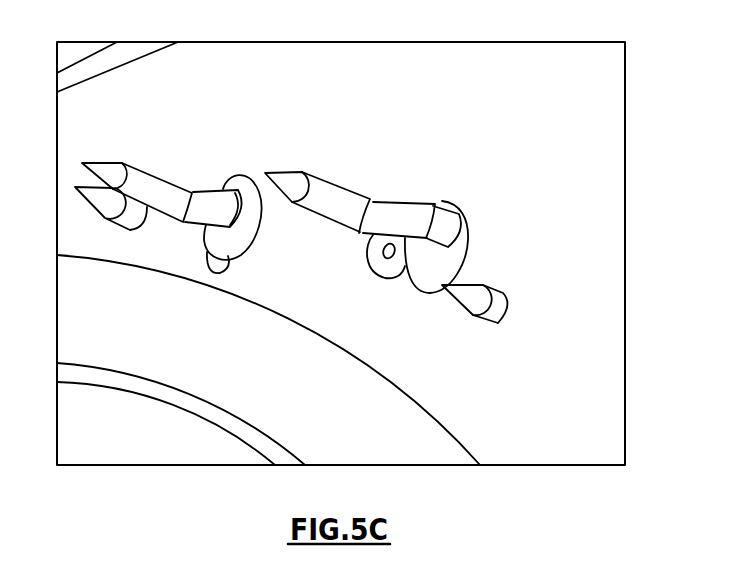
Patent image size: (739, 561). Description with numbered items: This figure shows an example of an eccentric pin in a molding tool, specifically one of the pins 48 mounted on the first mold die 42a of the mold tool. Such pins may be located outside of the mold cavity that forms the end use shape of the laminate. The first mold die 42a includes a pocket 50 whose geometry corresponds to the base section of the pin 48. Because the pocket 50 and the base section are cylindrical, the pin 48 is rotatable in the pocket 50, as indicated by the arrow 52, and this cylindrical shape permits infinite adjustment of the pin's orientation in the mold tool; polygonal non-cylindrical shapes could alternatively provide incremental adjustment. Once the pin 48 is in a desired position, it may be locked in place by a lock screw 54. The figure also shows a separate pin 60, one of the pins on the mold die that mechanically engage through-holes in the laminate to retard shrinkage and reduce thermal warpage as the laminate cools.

The first mold die 42a is at (591, 176).
The pin 48 is at (457, 188).
The pocket 50 is at (462, 262).
The arrow 52 is at (335, 237).
The lock screw 54 is at (378, 280).
The pin 60 is at (497, 312).